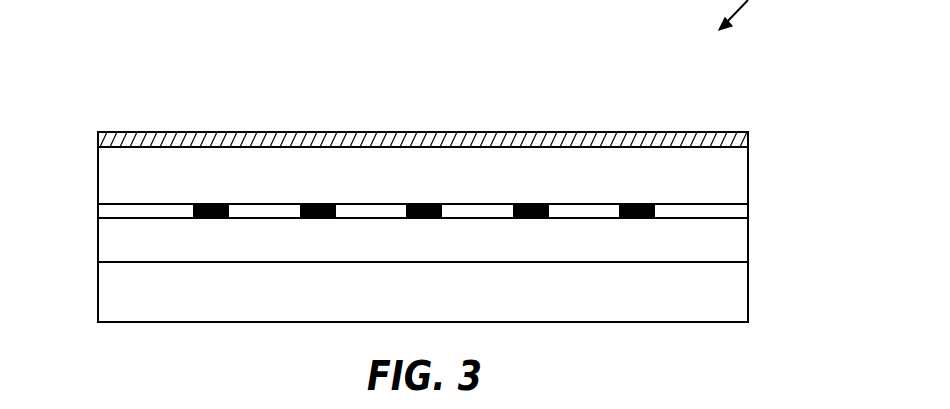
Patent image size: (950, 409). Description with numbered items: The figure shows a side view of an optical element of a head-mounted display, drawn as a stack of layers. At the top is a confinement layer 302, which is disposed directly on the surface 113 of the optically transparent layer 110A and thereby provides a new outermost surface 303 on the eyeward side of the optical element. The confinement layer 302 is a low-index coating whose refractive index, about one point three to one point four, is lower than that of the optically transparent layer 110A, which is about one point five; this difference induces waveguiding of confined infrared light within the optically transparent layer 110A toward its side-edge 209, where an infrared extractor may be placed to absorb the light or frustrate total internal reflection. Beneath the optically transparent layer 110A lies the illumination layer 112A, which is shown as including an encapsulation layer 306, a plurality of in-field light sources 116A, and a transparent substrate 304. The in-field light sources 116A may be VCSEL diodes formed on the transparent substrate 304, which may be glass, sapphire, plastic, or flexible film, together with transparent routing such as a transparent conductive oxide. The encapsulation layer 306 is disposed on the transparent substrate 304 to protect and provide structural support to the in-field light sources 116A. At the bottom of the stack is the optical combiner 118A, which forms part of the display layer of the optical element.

The surface 113 is at (135, 142).
The outermost surface 303 is at (356, 130).
The confinement layer 302 is at (748, 134).
The optically transparent layer 110A is at (740, 181).
The side-edge 209 is at (98, 178).
The encapsulation layer 306 is at (105, 209).
The in-field light sources 116A is at (323, 218).
The transparent substrate 304 is at (108, 249).
The illumination layer 112A is at (750, 204).
The optical combiner 118A is at (737, 298).